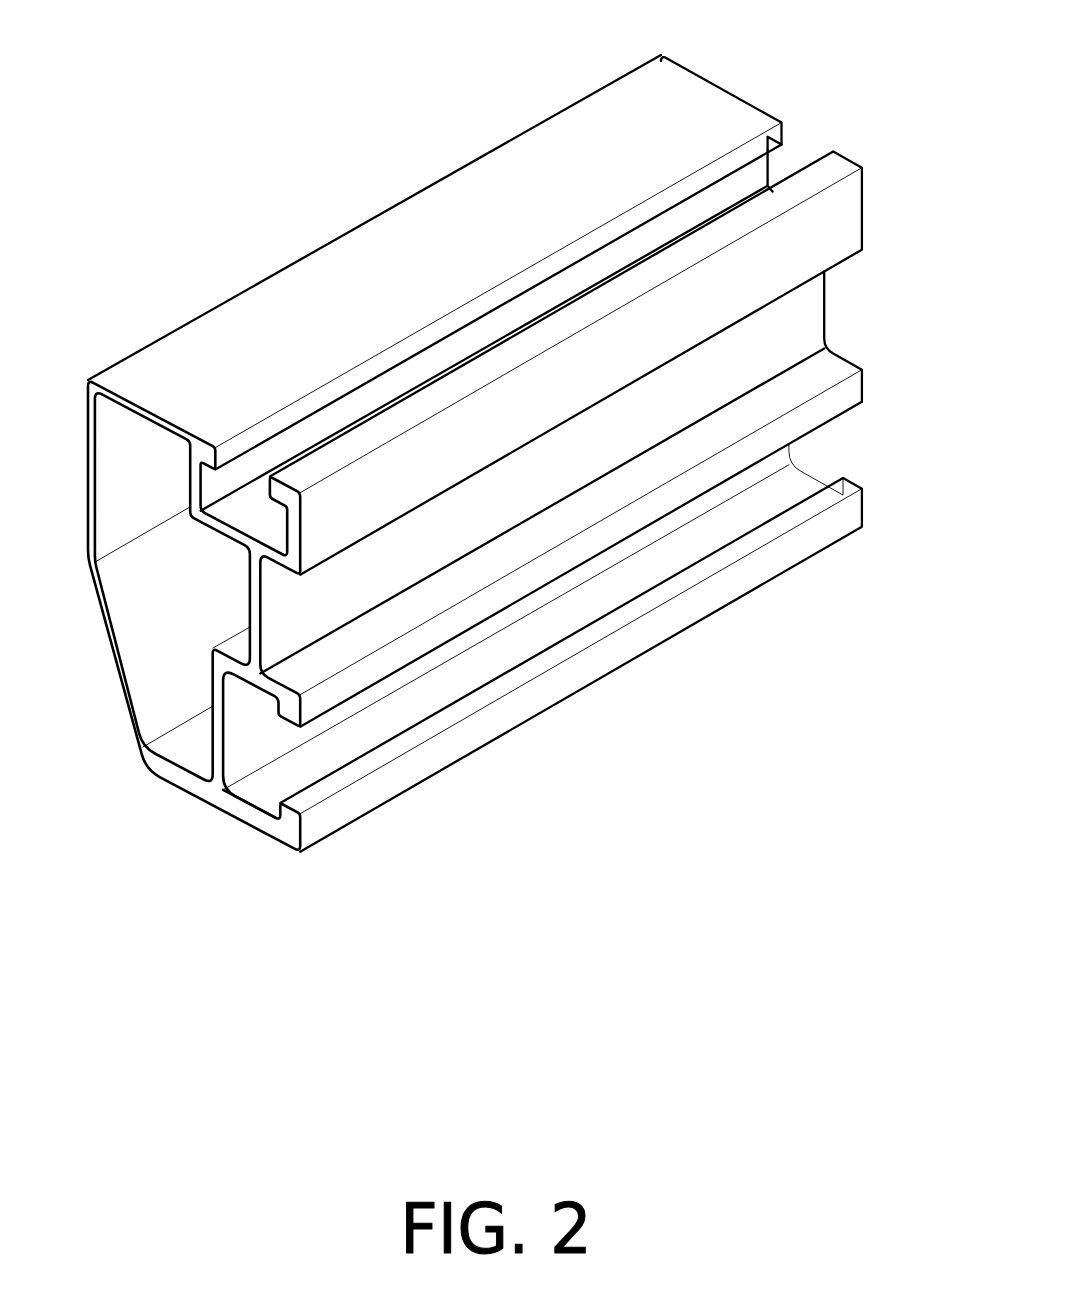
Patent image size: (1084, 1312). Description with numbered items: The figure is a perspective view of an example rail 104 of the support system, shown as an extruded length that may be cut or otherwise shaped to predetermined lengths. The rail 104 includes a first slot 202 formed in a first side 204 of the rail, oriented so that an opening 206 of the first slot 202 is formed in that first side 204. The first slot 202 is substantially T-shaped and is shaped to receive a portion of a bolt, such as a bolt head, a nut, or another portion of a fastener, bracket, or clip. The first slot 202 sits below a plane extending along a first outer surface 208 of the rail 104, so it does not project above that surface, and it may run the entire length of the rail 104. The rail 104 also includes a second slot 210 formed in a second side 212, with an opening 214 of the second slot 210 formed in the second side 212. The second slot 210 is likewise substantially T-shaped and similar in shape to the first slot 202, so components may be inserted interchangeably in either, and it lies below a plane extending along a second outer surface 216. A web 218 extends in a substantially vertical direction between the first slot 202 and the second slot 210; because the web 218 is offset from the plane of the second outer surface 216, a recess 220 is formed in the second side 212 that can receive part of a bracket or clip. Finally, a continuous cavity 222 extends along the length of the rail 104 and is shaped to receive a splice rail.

The rail 104 is at (269, 112).
The first slot 202 is at (200, 478).
The first side 204 is at (717, 72).
The opening 206 is at (799, 138).
The first outer surface 208 is at (573, 183).
The second slot 210 is at (250, 805).
The second side 212 is at (843, 566).
The opening 214 is at (851, 444).
The second outer surface 216 is at (862, 204).
The web 218 is at (262, 620).
The recess 220 is at (860, 311).
The cavity 222 is at (153, 730).